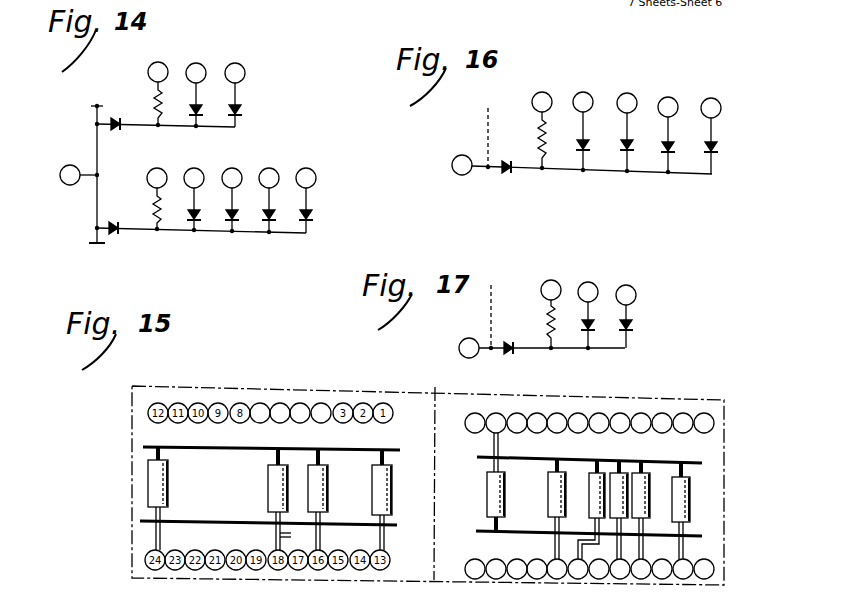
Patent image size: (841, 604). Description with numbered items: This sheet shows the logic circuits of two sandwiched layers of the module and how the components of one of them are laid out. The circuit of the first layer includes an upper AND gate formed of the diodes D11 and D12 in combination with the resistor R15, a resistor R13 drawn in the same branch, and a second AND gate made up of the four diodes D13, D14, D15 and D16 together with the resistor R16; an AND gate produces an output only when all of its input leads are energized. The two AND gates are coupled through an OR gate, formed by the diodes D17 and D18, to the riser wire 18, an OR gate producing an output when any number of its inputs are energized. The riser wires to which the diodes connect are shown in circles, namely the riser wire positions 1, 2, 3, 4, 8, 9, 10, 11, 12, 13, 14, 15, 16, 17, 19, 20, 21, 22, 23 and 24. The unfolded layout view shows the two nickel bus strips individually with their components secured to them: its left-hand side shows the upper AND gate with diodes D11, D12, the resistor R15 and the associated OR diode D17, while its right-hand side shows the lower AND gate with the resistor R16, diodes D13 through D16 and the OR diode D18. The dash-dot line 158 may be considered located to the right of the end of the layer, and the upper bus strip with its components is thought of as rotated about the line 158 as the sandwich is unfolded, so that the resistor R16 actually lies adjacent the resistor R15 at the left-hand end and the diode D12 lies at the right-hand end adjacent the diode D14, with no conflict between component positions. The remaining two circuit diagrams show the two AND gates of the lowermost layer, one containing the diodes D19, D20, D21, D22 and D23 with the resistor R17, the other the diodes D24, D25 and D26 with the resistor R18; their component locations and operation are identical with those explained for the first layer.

In FIG. 14, the diode D11 is at (201, 115).
In FIG. 15, the diode D11 is at (328, 490).
In FIG. 14, the diode D12 is at (242, 114).
In FIG. 15, the diode D12 is at (380, 492).
In FIG. 14, the diode D13 is at (205, 219).
In FIG. 15, the diode D13 is at (648, 481).
In FIG. 14, the diode D14 is at (243, 219).
In FIG. 15, the diode D14 is at (493, 491).
In FIG. 14, the diode D15 is at (281, 221).
In FIG. 15, the diode D15 is at (620, 483).
In FIG. 14, the diode D16 is at (313, 220).
In FIG. 15, the diode D16 is at (556, 498).
In FIG. 14, the OR gate diode D17 is at (113, 127).
In FIG. 15, the OR gate diode D17 is at (278, 490).
In FIG. 14, the OR gate diode D18 is at (113, 231).
In FIG. 15, the OR gate diode D18 is at (592, 481).
In FIG. 16, the diode D19 is at (578, 143).
In FIG. 16, the diode D20 is at (622, 146).
In FIG. 16, the diode D21 is at (664, 148).
In FIG. 16, the diode D22 is at (719, 147).
In FIG. 16, the diode D23 is at (505, 170).
In FIG. 17, the diode D24 is at (594, 333).
In FIG. 17, the diode D25 is at (640, 330).
In FIG. 17, the diode D26 is at (507, 341).
In FIG. 14, the resistor R13 is at (155, 105).
In FIG. 15, the resistor R15 is at (168, 480).
In FIG. 14, the resistor R16 is at (155, 211).
In FIG. 15, the resistor R16 is at (683, 506).
In FIG. 16, the resistor R17 is at (540, 142).
In FIG. 17, the resistor R18 is at (553, 334).
In FIG. 15, the dash-dot line 158 is at (433, 532).
In FIG. 15, the riser wire position 1 is at (475, 423).
In FIG. 14, the riser wire position 2 is at (232, 178).
In FIG. 16, the riser wire position 2 is at (627, 103).
In FIG. 15, the riser wire position 2 is at (496, 423).
In FIG. 15, the riser wire position 3 is at (517, 423).
In FIG. 17, the riser wire position 4 is at (588, 292).
In FIG. 17, the riser wire position 8 is at (469, 348).
In FIG. 15, the riser wire position 8 is at (620, 423).
In FIG. 15, the riser wire position 9 is at (641, 423).
In FIG. 15, the riser wire position 10 is at (662, 423).
In FIG. 15, the riser wire position 11 is at (683, 423).
In FIG. 15, the riser wire position 12 is at (704, 423).
In FIG. 14, the riser wire position 13 is at (235, 73).
In FIG. 17, the riser wire position 13 is at (626, 295).
In FIG. 15, the riser wire position 13 is at (475, 569).
In FIG. 14, the riser wire position 14 is at (158, 72).
In FIG. 15, the riser wire position 14 is at (496, 569).
In FIG. 15, the riser wire position 15 is at (517, 569).
In FIG. 14, the riser wire position 16 is at (196, 73).
In FIG. 15, the riser wire position 16 is at (537, 569).
In FIG. 14, the riser wire position 17 is at (306, 178).
In FIG. 16, the riser wire position 17 is at (711, 108).
In FIG. 15, the riser wire position 17 is at (557, 569).
In FIG. 14, the riser wire 18 is at (70, 175).
In FIG. 15, the riser wire 18 is at (578, 569).
In FIG. 16, the riser wire position 19 is at (462, 165).
In FIG. 15, the riser wire position 19 is at (599, 569).
In FIG. 14, the riser wire position 20 is at (269, 178).
In FIG. 16, the riser wire position 20 is at (668, 107).
In FIG. 15, the riser wire position 20 is at (620, 569).
In FIG. 14, the riser wire position 21 is at (194, 178).
In FIG. 15, the riser wire position 21 is at (641, 569).
In FIG. 16, the riser wire position 22 is at (583, 102).
In FIG. 15, the riser wire position 22 is at (662, 569).
In FIG. 14, the riser wire position 23 is at (157, 178).
In FIG. 17, the riser wire position 23 is at (551, 290).
In FIG. 15, the riser wire position 23 is at (683, 569).
In FIG. 16, the riser wire position 24 is at (542, 102).
In FIG. 15, the riser wire position 24 is at (704, 569).